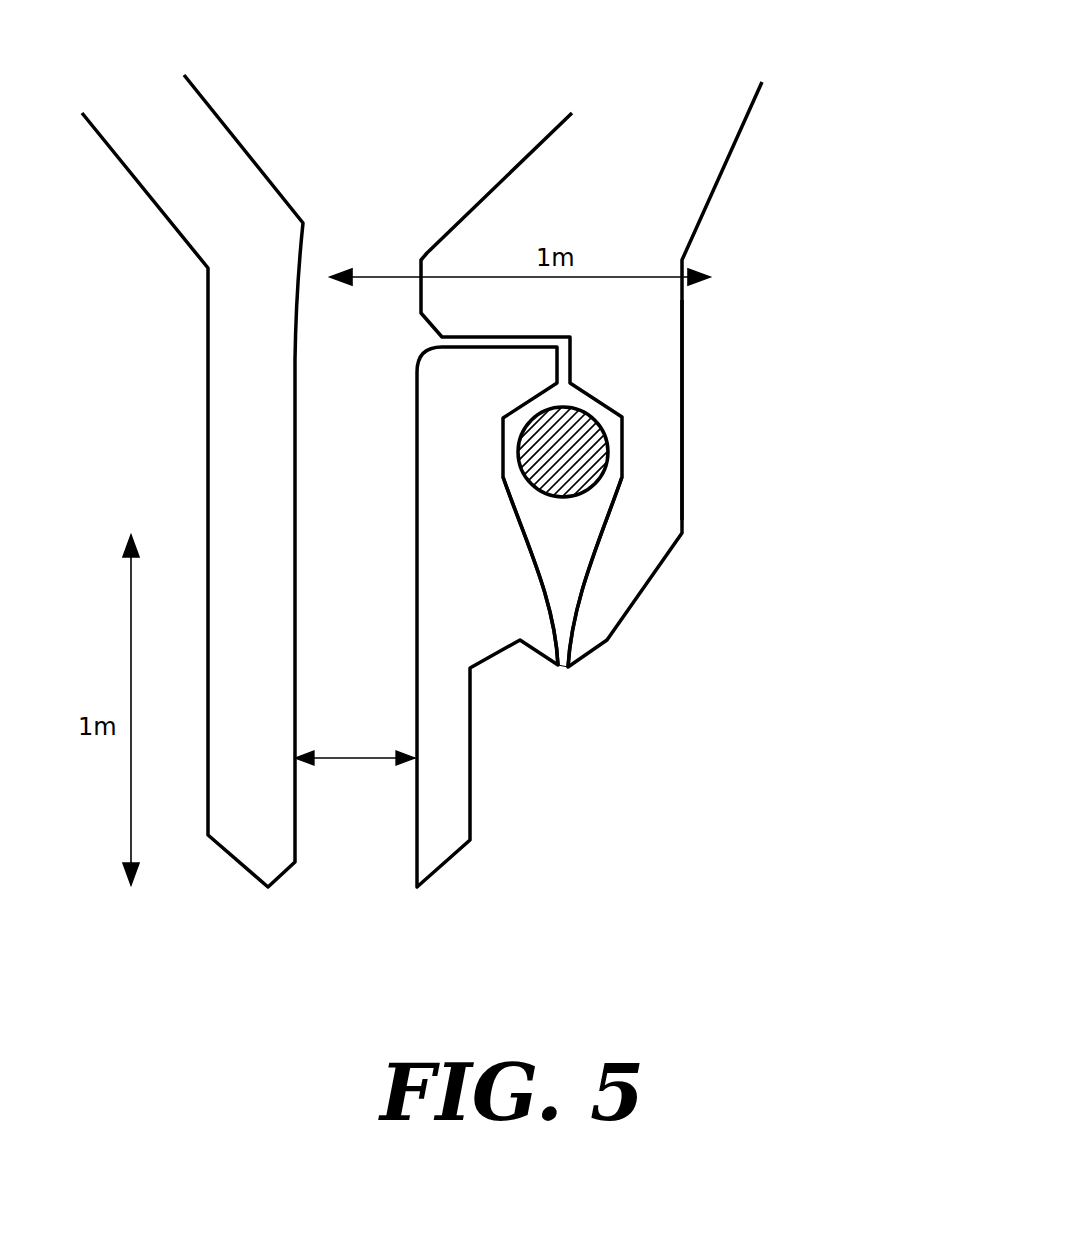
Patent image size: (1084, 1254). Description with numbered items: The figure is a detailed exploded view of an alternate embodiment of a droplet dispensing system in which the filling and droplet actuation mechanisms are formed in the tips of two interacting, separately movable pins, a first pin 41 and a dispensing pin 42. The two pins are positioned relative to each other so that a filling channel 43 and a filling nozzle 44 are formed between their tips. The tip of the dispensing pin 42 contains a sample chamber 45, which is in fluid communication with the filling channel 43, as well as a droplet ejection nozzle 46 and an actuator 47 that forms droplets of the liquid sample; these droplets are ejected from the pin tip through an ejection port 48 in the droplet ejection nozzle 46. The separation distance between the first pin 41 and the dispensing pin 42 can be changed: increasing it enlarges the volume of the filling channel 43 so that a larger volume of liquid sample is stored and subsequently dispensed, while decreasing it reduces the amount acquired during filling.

The first pin 41 is at (192, 156).
The dispensing pin 42 is at (655, 156).
The filling channel 43 is at (355, 813).
The filling nozzle 44 is at (420, 893).
The sample chamber 45 is at (592, 512).
The droplet ejection nozzle 46 is at (817, 122).
The actuator 47 is at (607, 447).
The ejection port 48 is at (562, 670).